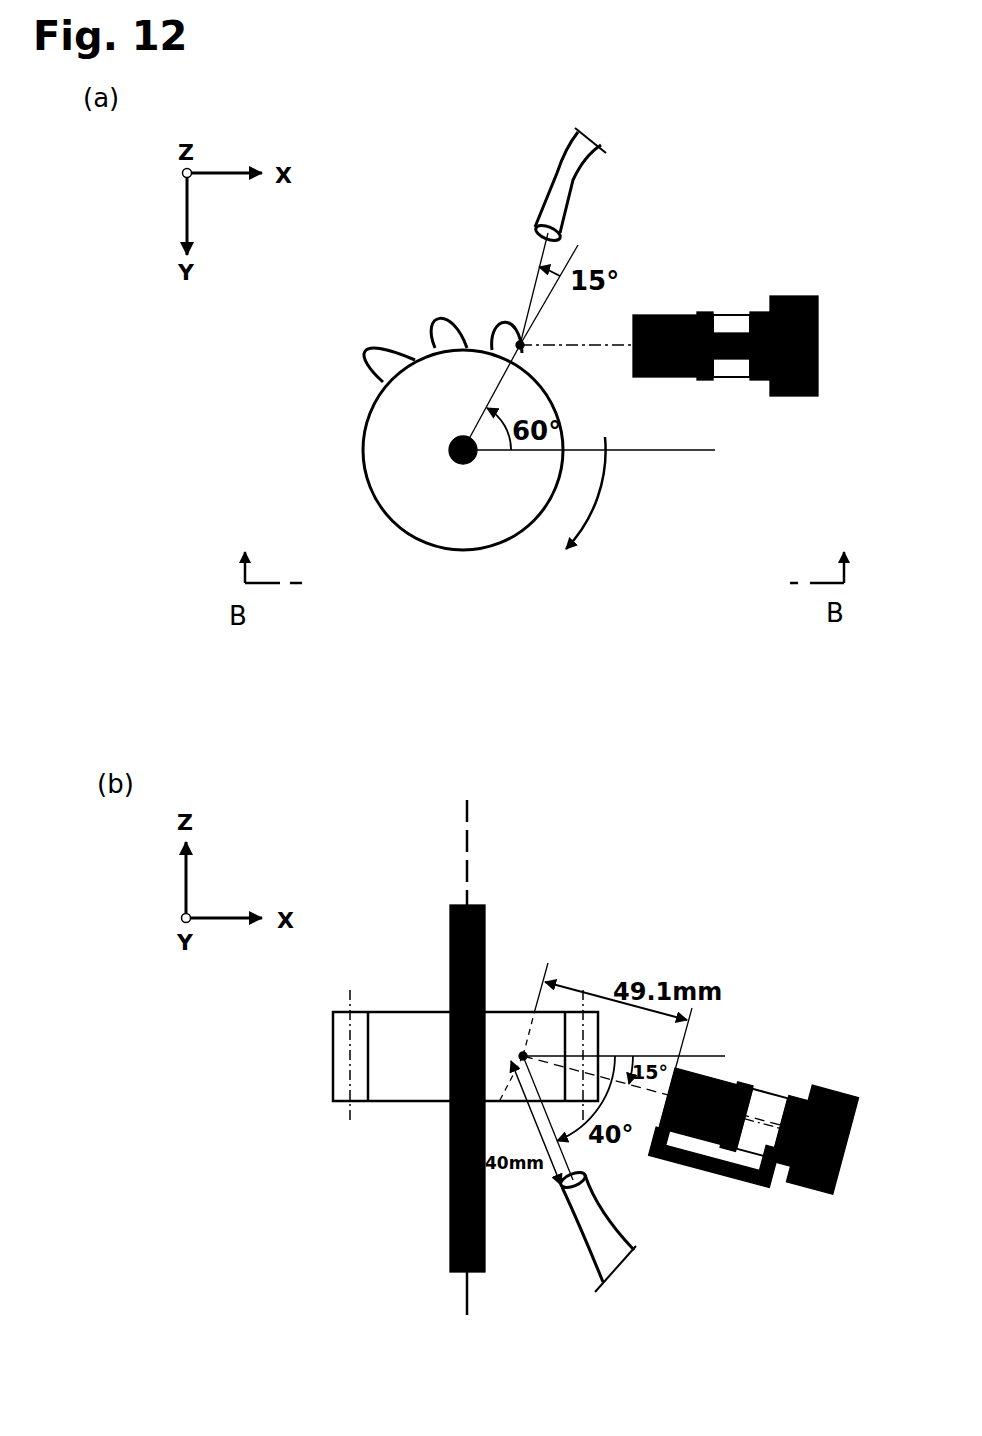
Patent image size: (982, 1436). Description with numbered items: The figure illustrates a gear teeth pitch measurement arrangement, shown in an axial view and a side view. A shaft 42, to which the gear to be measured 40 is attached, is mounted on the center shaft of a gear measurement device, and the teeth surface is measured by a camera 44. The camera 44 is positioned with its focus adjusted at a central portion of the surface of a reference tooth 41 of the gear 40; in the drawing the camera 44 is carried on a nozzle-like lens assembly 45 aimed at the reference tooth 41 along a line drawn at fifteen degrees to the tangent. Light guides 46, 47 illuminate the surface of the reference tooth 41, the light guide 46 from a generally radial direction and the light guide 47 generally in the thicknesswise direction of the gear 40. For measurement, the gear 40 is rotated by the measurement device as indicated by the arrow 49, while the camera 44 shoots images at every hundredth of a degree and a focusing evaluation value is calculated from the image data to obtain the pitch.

The gear to be measured 40 is at (362, 432).
The reference tooth 41 is at (517, 328).
The shaft 42 is at (452, 455).
The camera 44 is at (790, 296).
The nozzle 45 is at (680, 315).
The light guide 46 is at (552, 176).
The light guide 47 is at (600, 1222).
The arrow 49 is at (598, 500).